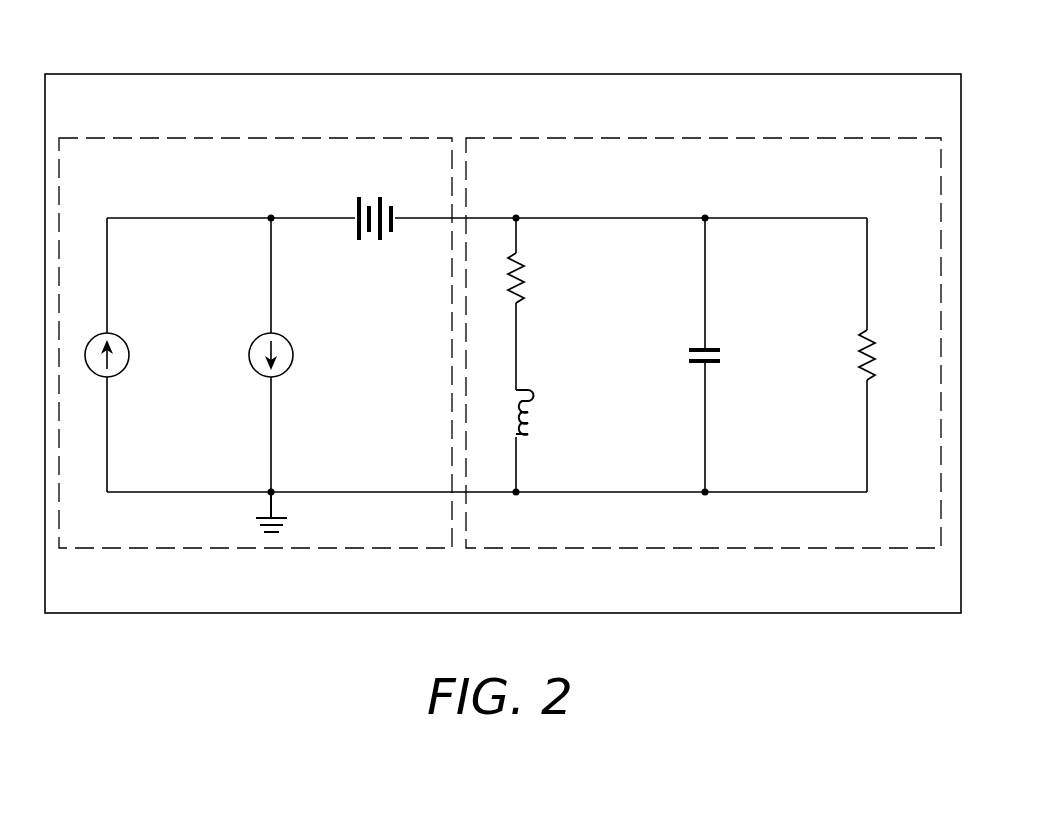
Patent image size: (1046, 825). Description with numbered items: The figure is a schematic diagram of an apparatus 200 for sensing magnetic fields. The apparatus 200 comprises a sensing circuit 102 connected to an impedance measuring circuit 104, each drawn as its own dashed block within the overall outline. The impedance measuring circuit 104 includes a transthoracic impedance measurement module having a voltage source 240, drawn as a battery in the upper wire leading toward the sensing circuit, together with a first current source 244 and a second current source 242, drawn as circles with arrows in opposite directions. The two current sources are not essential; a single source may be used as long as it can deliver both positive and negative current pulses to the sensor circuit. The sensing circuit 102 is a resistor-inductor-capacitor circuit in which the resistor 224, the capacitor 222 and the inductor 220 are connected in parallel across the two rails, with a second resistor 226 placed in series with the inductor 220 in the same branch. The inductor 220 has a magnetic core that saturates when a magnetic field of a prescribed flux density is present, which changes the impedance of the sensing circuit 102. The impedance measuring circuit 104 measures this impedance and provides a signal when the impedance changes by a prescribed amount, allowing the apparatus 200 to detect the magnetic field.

The apparatus 200 is at (503, 73).
The impedance measuring circuit 104 is at (150, 137).
The sensing circuit 102 is at (839, 137).
The voltage source 240 is at (357, 205).
The first current source 244 is at (127, 343).
The second current source 242 is at (291, 343).
The second resistor 226 is at (524, 266).
The inductor 220 is at (534, 417).
The capacitor 222 is at (712, 349).
The resistor 224 is at (876, 345).